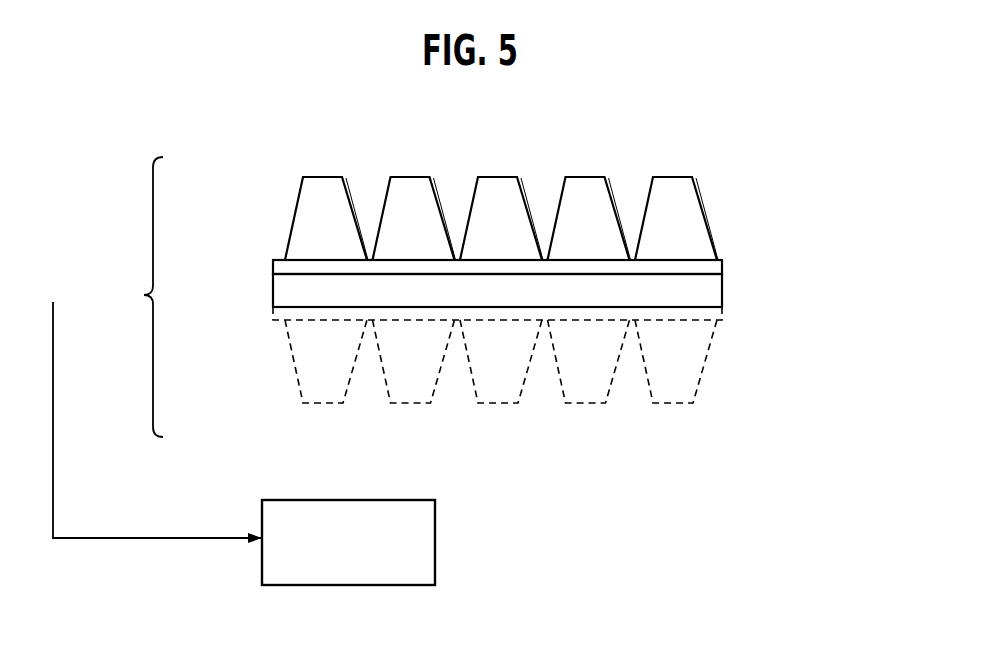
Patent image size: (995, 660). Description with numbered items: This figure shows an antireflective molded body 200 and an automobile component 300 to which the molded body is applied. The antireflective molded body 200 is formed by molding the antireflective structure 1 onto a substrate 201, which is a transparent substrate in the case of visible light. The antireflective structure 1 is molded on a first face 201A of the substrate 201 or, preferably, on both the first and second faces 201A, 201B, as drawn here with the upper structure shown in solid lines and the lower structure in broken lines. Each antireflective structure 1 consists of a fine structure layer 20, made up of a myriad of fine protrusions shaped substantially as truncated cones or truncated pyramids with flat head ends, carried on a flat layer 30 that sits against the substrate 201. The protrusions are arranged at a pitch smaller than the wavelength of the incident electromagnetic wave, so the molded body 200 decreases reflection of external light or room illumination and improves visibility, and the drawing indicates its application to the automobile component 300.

The antireflective structure 1 is at (648, 135).
The fine structure layer 20 is at (705, 178).
The flat layer 30 is at (713, 268).
The substrate 201 is at (722, 288).
The first face 201A is at (300, 274).
The second face 201B is at (301, 307).
The antireflective molded body 200 is at (53, 302).
The automobile component 300 is at (244, 443).